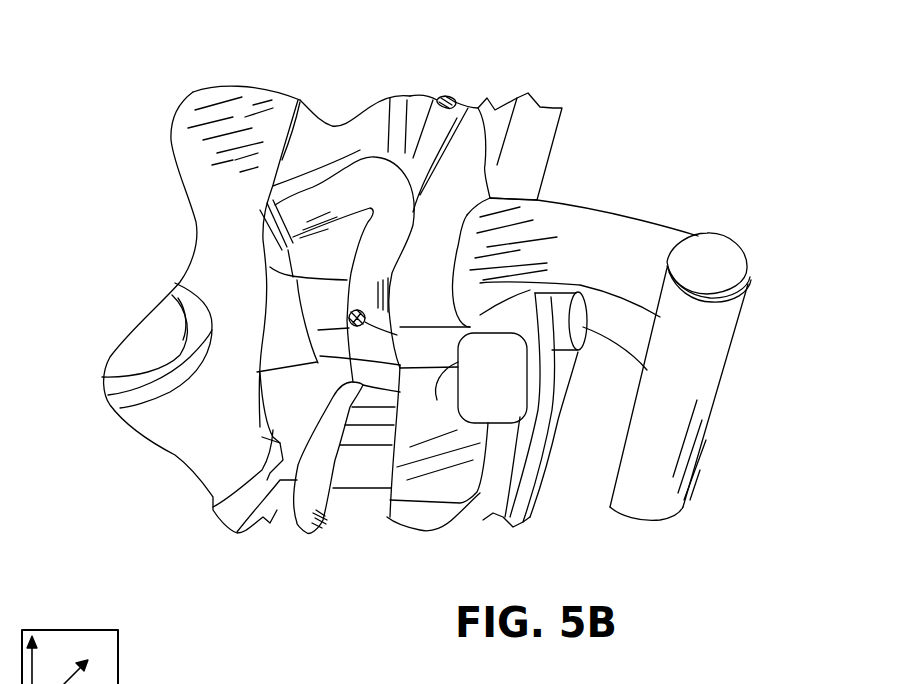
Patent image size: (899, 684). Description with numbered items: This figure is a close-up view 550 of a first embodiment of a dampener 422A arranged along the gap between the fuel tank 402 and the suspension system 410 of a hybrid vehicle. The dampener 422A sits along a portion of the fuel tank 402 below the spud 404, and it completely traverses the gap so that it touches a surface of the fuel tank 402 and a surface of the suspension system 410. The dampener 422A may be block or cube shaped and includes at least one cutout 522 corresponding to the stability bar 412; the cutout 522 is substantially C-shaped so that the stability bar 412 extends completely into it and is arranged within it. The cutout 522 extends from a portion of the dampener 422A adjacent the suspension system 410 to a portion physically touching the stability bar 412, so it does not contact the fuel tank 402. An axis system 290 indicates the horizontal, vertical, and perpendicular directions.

The fuel tank 402 is at (193, 92).
The spud 404 is at (273, 210).
The suspension system 410 is at (606, 181).
The stability bar 412 is at (307, 533).
The first dampener 422A is at (277, 392).
The cutout 522 is at (375, 402).
The close-up view 550 is at (717, 101).
The axis system 290 is at (118, 650).